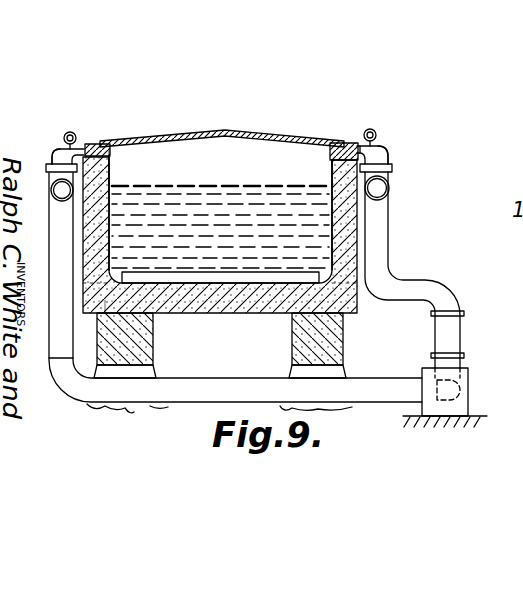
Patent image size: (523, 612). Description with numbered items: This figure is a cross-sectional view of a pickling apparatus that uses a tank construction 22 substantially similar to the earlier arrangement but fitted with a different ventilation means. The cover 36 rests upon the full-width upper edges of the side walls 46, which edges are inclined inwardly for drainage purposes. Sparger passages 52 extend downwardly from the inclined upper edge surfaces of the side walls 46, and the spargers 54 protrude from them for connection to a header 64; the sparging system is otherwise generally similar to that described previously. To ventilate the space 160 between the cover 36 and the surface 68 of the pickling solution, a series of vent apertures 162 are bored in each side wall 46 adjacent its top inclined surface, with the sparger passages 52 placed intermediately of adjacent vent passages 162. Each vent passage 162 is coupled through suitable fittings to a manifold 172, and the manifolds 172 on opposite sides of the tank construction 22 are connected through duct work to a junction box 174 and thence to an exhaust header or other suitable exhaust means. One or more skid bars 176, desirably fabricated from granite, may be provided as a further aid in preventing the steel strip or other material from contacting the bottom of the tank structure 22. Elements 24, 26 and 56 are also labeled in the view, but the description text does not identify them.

The tank construction 22 is at (365, 298).
The supporting pedestals 24 is at (292, 348).
The ground 26 is at (219, 415).
The cover 36 is at (200, 131).
The side wall 46 is at (107, 210).
The sparger passage 52 is at (100, 242).
The sparger 54 is at (363, 264).
The top flange 56 is at (90, 145).
The header 64 is at (70, 133).
The surface of the pickling solution 68 is at (244, 184).
The space 160 is at (292, 157).
The vent aperture 162 is at (363, 163).
The manifold 172 is at (391, 188).
The junction box 174 is at (464, 375).
The skid bar 176 is at (230, 284).